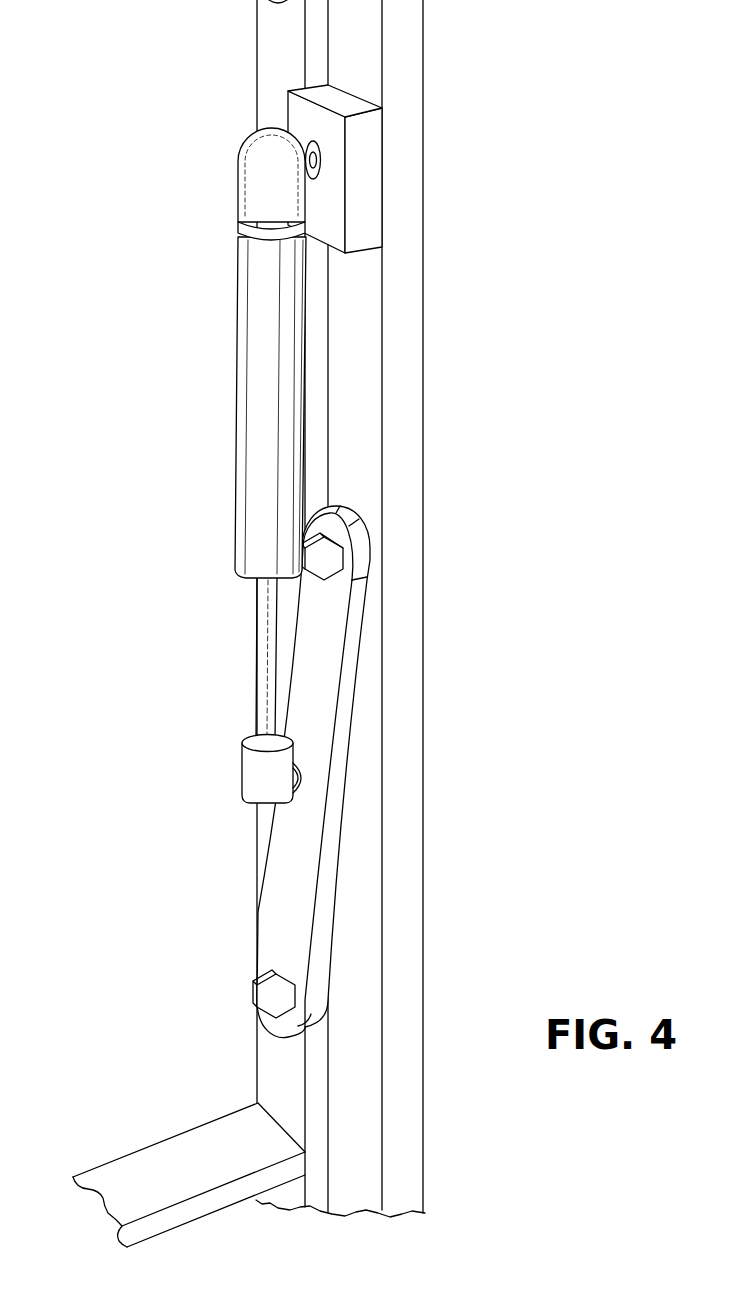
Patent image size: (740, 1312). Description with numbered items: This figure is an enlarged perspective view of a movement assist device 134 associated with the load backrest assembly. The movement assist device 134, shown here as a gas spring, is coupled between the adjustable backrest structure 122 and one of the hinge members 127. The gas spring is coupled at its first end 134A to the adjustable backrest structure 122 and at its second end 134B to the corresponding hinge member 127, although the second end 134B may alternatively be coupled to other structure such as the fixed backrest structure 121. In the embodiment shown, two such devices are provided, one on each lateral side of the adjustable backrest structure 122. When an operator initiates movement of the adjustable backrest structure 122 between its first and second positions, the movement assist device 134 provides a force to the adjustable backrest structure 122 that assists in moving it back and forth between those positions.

The fixed backrest structure 121 is at (270, 1072).
The adjustable backrest structure 122 is at (405, 378).
The hinge member 127 is at (280, 907).
The movement assist device 134 is at (253, 392).
The first end 134A is at (320, 162).
The second end 134B is at (260, 770).